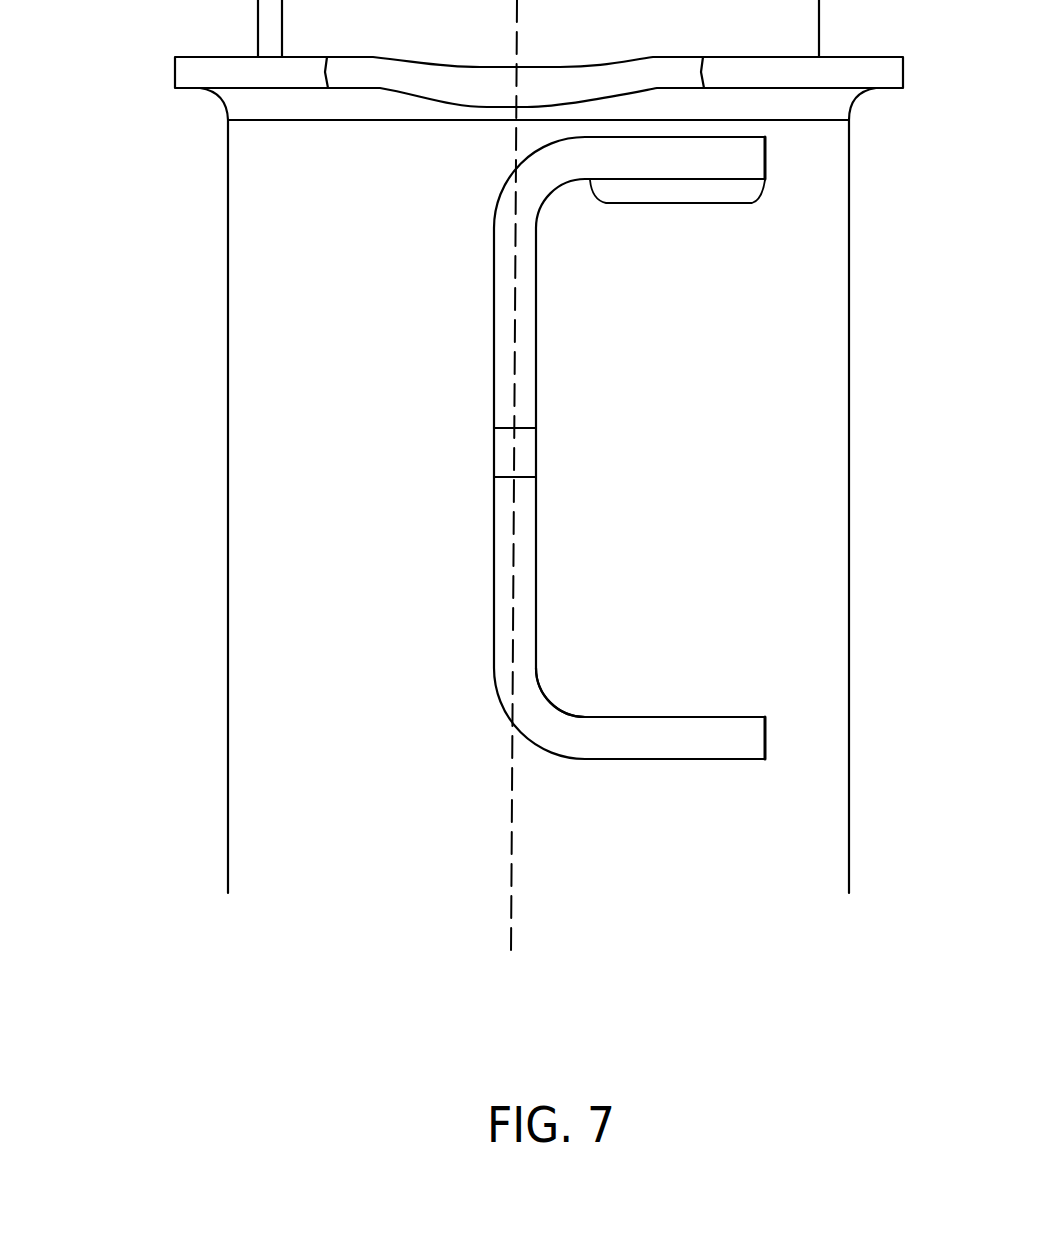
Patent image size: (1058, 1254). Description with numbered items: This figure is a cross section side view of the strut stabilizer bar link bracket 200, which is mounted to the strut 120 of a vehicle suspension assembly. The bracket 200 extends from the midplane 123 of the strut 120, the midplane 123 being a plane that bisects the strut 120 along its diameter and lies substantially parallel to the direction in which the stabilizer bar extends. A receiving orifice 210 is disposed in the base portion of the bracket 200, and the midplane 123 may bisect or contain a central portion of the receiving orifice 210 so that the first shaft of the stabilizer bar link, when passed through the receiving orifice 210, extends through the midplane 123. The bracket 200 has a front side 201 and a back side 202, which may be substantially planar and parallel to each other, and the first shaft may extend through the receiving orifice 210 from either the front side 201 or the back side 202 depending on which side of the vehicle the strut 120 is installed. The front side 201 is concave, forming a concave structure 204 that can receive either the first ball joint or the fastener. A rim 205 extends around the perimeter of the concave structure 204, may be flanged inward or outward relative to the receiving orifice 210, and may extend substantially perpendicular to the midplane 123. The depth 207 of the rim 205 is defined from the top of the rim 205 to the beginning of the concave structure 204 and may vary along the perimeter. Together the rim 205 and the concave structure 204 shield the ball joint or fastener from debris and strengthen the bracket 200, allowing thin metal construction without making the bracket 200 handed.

The strut 120 is at (377, 251).
The midplane 123 is at (510, 915).
The strut stabilizer bar link bracket 200 is at (511, 448).
The front side 201 is at (536, 358).
The back side 202 is at (493, 578).
The concave structure 204 is at (550, 690).
The rim 205 is at (767, 153).
The depth 207 is at (675, 205).
The receiving orifice 210 is at (493, 426).